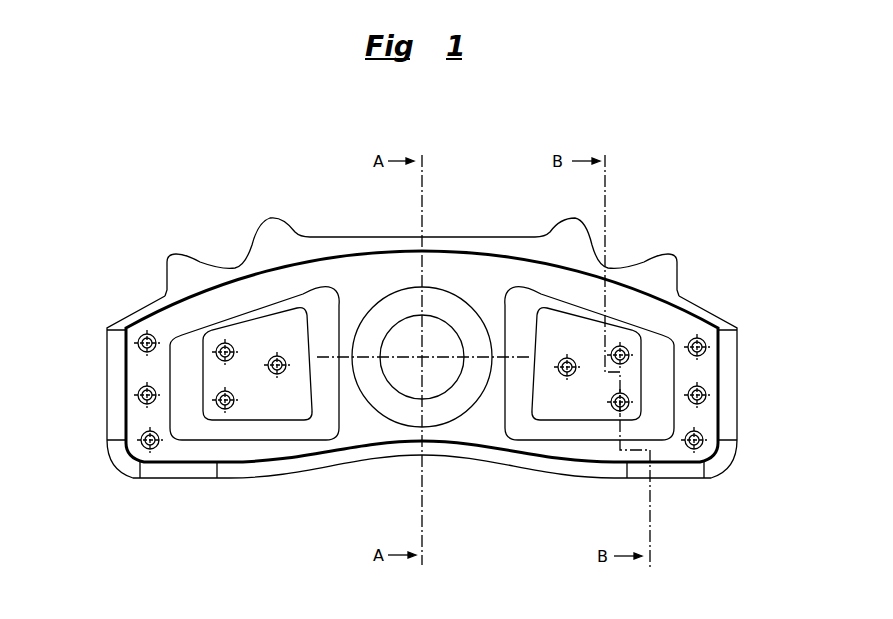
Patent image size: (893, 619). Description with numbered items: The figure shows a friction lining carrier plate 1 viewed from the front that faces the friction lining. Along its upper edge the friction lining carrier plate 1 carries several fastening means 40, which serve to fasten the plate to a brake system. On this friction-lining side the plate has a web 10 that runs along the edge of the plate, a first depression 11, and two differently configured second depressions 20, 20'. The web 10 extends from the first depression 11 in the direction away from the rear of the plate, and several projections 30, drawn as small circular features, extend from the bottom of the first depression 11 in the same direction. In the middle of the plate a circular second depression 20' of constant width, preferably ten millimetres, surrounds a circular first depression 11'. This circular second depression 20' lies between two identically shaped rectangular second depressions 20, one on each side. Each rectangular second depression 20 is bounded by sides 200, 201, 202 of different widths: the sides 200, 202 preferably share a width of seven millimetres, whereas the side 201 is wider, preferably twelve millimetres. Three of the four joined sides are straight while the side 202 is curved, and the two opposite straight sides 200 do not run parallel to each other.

The friction lining carrier plate 1 is at (723, 300).
The web 10 is at (673, 468).
The first depression 11 is at (583, 423).
The circular first depression 11' is at (435, 413).
The second depression 20 is at (422, 314).
The circular second depression 20' is at (414, 409).
The projections 30 is at (630, 403).
The fastening means 40 is at (178, 263).
The side of second depression 200 is at (243, 313).
The side of second depression 201 is at (185, 378).
The side of second depression 202 is at (317, 336).